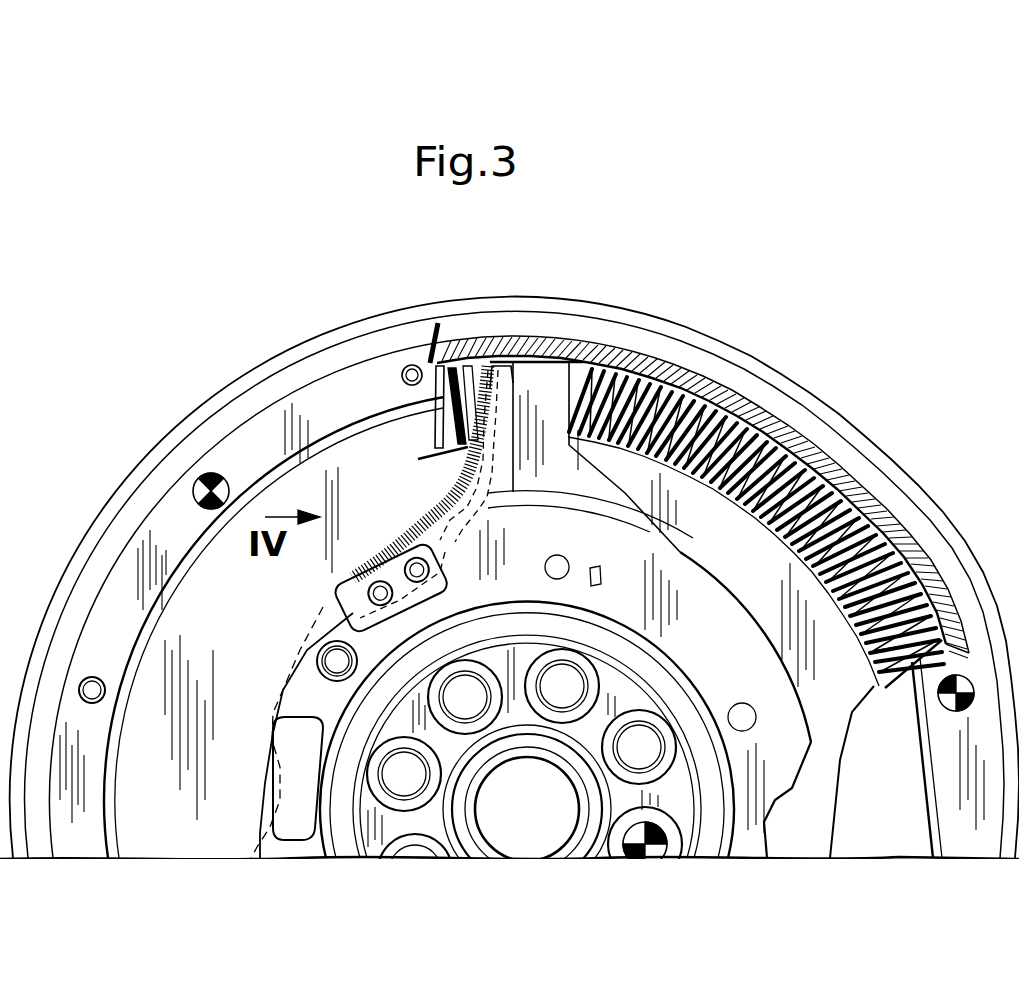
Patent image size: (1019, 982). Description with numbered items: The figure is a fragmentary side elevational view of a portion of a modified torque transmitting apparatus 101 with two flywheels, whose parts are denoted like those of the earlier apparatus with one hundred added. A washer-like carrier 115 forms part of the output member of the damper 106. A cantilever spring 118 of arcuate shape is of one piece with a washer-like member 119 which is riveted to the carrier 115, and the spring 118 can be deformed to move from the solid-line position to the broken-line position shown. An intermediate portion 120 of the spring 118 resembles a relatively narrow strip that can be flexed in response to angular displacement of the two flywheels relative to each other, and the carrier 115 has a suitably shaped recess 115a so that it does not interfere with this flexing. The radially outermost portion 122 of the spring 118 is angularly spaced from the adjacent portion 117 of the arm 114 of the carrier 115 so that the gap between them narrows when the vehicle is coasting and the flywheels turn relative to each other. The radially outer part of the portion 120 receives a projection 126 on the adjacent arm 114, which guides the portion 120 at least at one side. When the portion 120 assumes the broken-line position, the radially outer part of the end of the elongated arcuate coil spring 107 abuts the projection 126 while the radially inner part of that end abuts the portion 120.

The torque transmitting apparatus 101 is at (713, 322).
The damper 106 is at (765, 400).
The elongated arcuate coil spring 107 is at (857, 490).
The arm 114 is at (547, 387).
The washer-like carrier 115 is at (683, 596).
The recess 115a is at (487, 498).
The portion of the arm 117 is at (531, 413).
The cantilever spring 118 is at (440, 518).
The washer-like member 119 is at (337, 588).
The intermediate portion 120 is at (468, 500).
The radially outermost portion 122 is at (397, 368).
The projection 126 is at (499, 368).